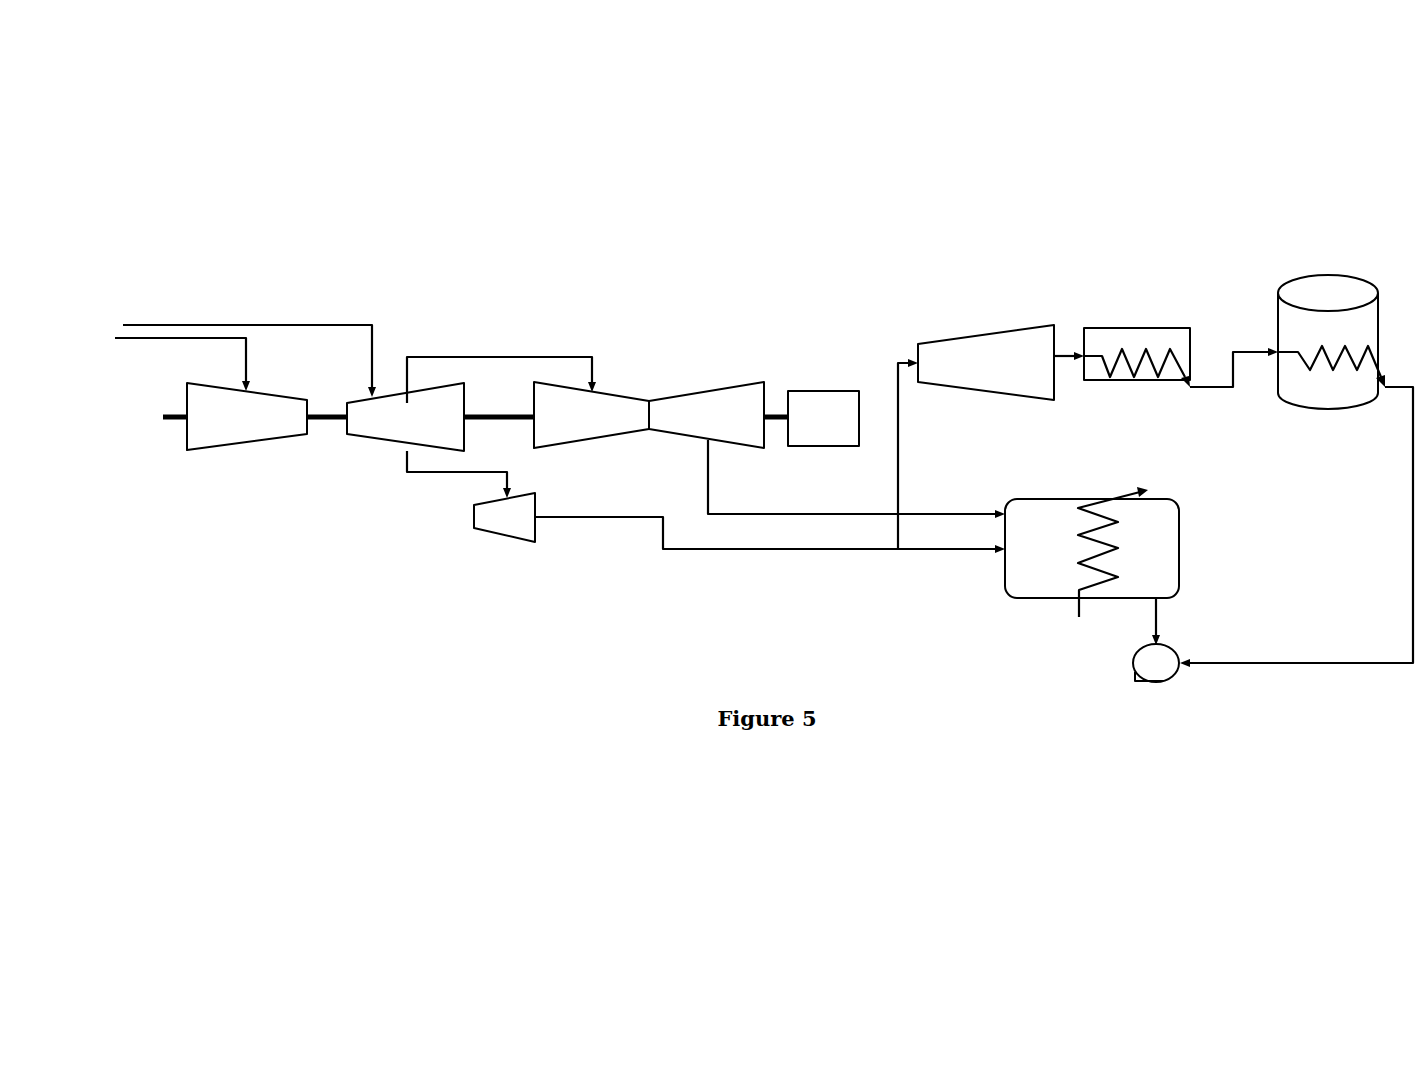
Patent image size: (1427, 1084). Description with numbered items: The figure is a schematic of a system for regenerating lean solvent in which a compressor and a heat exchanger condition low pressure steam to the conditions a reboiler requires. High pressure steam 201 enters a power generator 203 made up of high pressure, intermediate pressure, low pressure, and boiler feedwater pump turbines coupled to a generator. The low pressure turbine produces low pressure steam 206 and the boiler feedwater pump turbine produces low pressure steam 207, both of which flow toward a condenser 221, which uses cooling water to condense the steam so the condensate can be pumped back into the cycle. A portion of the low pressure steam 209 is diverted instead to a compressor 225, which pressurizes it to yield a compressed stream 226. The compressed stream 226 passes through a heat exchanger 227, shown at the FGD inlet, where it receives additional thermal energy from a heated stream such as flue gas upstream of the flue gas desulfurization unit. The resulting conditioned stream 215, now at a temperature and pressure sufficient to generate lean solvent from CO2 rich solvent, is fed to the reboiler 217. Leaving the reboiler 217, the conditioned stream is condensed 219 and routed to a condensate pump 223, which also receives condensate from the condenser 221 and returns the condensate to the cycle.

The high pressure steam 201 is at (217, 305).
The power generator 203 is at (351, 571).
The low pressure steam 206 is at (827, 513).
The low pressure steam 207 is at (710, 549).
The portion of the low pressure steam 209 is at (898, 472).
The conditioned stream 215 is at (1248, 352).
The reboiler 217 is at (1378, 320).
The condensed stream 219 is at (1410, 465).
The condenser 221 is at (1072, 498).
The condensate pump 223 is at (1136, 652).
The compressor 225 is at (985, 331).
The compressed stream 226 is at (1072, 355).
The heat exchanger 227 is at (1145, 325).